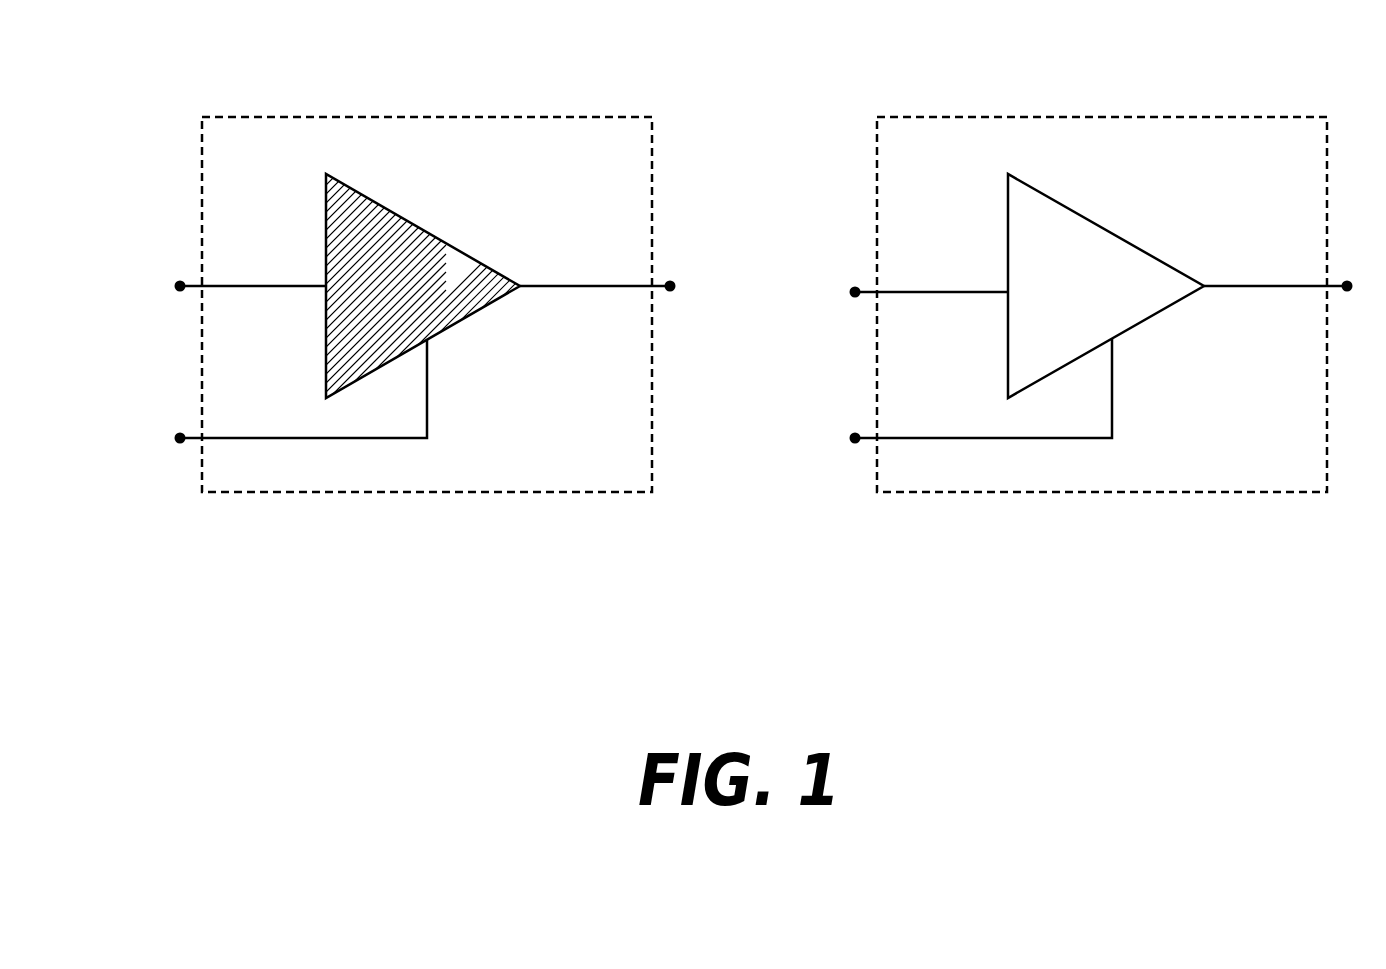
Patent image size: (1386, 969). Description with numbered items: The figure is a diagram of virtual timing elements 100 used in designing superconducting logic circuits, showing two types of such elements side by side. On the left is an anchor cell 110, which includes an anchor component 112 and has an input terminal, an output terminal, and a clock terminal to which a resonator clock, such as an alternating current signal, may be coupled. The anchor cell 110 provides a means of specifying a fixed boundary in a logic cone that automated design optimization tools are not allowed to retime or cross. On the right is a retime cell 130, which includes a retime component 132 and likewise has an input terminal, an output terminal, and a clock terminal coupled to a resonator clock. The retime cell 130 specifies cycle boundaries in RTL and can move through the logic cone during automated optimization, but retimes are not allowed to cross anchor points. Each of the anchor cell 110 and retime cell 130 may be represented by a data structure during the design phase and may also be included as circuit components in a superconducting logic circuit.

The virtual timing elements 100 is at (757, 677).
The anchor cell 110 is at (547, 117).
The anchor component 112 is at (413, 223).
The retime cell 130 is at (1223, 117).
The retime component 132 is at (1112, 230).